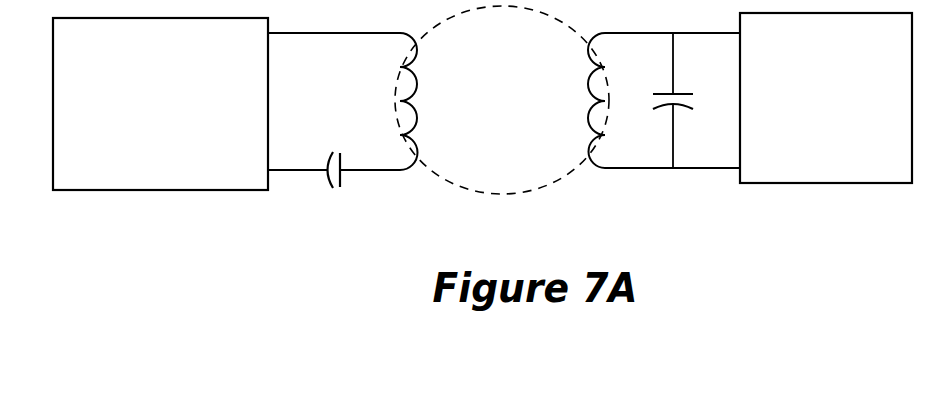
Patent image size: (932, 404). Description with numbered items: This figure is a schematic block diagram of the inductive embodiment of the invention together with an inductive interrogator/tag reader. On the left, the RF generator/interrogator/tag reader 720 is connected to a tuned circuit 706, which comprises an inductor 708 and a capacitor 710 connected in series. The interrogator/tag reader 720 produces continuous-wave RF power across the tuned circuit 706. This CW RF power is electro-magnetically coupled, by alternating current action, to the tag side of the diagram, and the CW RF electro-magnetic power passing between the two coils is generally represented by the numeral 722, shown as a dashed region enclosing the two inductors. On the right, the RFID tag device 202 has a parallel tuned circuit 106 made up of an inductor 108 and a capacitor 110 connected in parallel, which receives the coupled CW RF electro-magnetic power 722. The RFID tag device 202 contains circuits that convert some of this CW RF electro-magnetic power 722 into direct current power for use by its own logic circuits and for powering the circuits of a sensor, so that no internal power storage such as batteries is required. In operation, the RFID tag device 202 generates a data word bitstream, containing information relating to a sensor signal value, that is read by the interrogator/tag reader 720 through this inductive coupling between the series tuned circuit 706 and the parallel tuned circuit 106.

The interrogator/tag reader 720 is at (175, 190).
The tuned circuit 706 is at (367, 172).
The capacitor 710 is at (329, 151).
The inductor 708 is at (423, 110).
The CW RF electro-magnetic power 722 is at (520, 8).
The inductor 108 is at (587, 117).
The parallel tuned circuit 106 is at (642, 170).
The capacitor 110 is at (686, 94).
The RFID tag device 202 is at (825, 183).